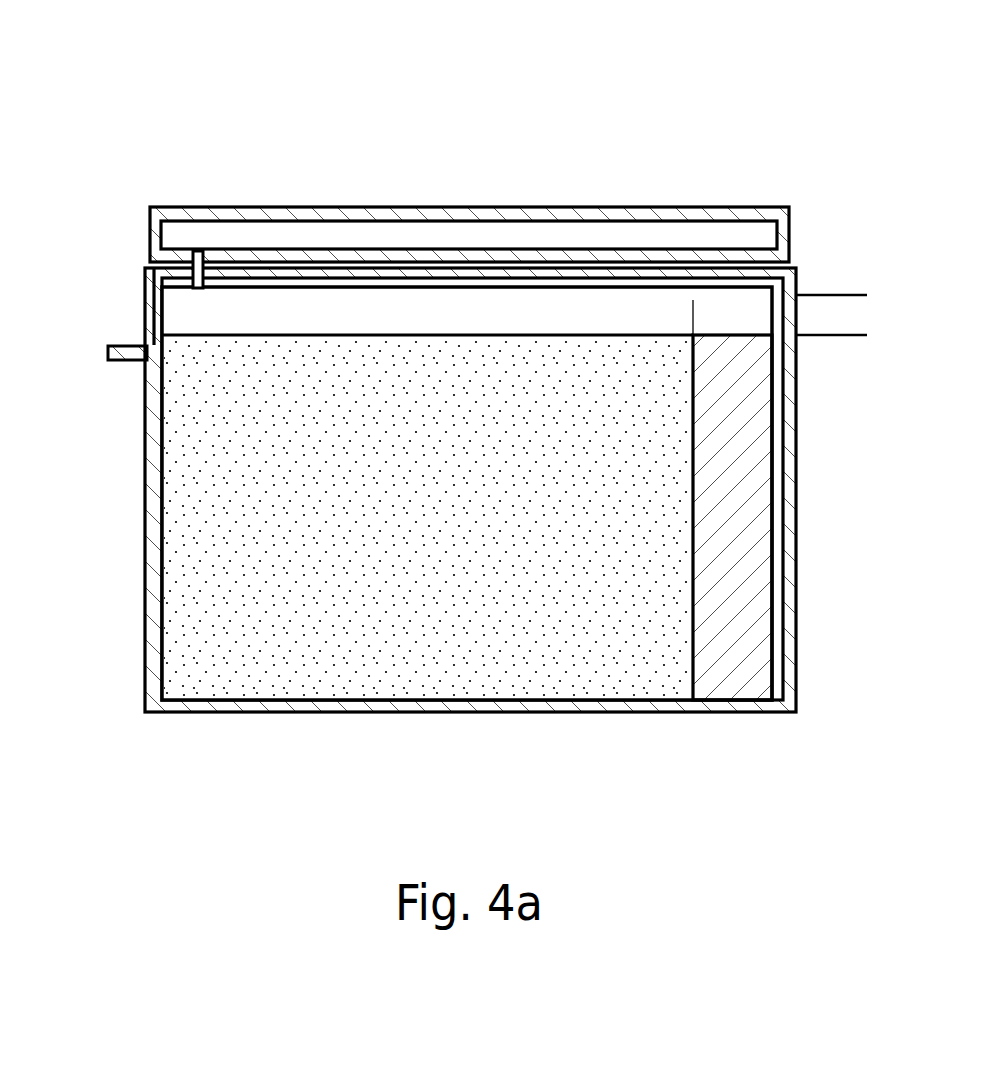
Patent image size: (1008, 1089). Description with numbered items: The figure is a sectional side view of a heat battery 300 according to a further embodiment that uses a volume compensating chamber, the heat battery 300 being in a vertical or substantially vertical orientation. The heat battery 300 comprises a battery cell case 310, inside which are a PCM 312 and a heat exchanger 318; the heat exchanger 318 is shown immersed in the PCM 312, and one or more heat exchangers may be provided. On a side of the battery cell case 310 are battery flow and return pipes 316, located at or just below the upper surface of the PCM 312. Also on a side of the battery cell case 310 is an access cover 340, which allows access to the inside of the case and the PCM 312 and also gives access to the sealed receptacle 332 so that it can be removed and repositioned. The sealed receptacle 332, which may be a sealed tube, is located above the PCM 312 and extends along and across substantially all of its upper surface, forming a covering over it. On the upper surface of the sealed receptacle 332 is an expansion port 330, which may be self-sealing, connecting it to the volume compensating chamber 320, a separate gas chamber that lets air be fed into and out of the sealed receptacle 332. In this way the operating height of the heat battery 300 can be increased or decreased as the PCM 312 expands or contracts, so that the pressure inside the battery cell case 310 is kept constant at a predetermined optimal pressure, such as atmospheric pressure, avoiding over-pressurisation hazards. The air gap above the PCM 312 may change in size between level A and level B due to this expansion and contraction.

The heat battery 300 is at (520, 80).
The battery cell case 310 is at (785, 652).
The PCM 312 is at (667, 543).
The battery flow and return pipes 316 is at (130, 362).
The heat exchanger 318 is at (748, 428).
The volume compensating chamber 320 is at (460, 207).
The expansion port 330 is at (193, 258).
The sealed receptacle 332 is at (692, 302).
The access cover 340 is at (147, 316).
The level A is at (846, 335).
The level B is at (847, 295).